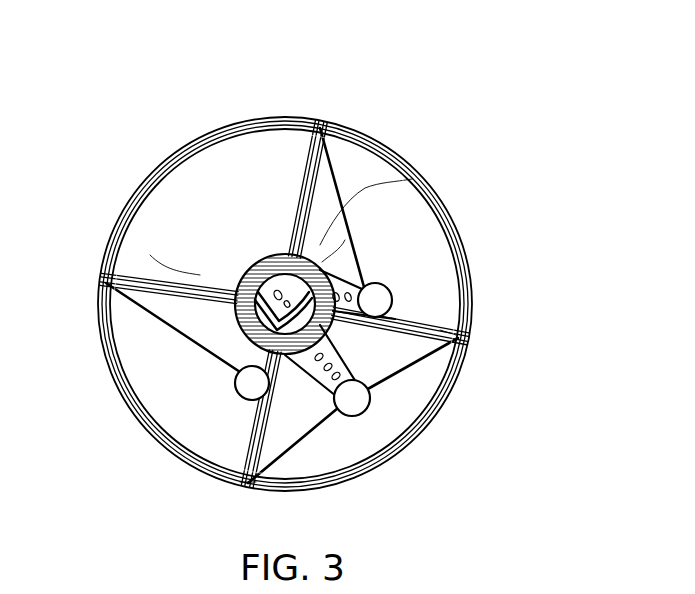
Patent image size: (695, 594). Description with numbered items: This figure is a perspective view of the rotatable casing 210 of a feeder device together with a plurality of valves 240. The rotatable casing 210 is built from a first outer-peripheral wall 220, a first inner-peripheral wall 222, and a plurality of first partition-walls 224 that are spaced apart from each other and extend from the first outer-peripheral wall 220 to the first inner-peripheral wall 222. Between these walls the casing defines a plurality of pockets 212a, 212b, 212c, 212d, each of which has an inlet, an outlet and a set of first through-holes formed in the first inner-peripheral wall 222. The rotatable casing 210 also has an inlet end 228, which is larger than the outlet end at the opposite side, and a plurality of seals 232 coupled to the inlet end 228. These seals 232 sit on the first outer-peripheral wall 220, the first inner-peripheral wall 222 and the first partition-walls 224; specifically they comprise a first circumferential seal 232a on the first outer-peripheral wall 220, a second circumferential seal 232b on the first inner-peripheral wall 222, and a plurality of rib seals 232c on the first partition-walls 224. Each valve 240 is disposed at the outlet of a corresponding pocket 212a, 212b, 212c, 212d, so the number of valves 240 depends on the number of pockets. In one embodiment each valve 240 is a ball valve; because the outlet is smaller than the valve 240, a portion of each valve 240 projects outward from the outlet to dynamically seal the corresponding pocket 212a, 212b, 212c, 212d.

The rotatable casing 210 is at (222, 58).
The pocket 212a is at (322, 127).
The pocket 212b is at (152, 250).
The pocket 212c is at (135, 325).
The pocket 212d is at (408, 413).
The first outer-peripheral wall 220 is at (121, 397).
The first inner-peripheral wall 222 is at (200, 327).
The first partition-walls 224 is at (215, 282).
The inlet end 228 is at (176, 247).
The seals 232 is at (332, 271).
The first circumferential seal 232a is at (325, 262).
The second circumferential seal 232b is at (420, 172).
The rib seals 232c is at (458, 330).
The valves 240 is at (392, 293).